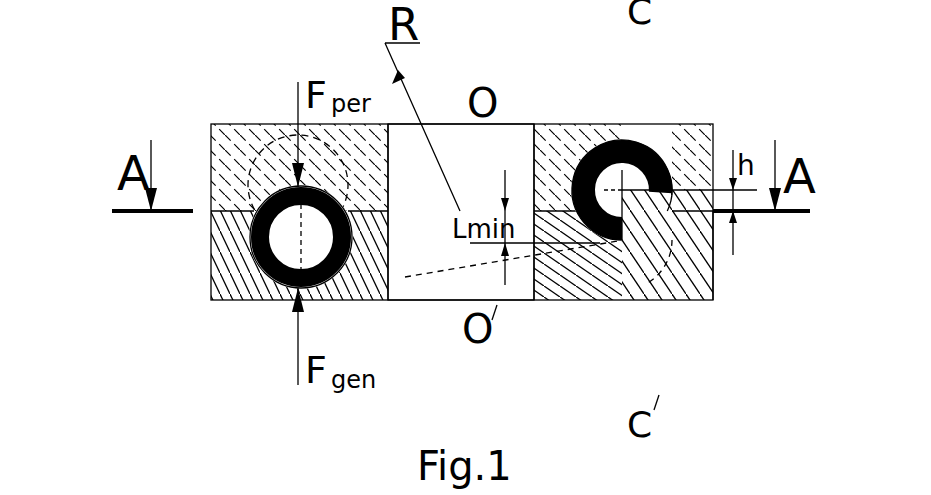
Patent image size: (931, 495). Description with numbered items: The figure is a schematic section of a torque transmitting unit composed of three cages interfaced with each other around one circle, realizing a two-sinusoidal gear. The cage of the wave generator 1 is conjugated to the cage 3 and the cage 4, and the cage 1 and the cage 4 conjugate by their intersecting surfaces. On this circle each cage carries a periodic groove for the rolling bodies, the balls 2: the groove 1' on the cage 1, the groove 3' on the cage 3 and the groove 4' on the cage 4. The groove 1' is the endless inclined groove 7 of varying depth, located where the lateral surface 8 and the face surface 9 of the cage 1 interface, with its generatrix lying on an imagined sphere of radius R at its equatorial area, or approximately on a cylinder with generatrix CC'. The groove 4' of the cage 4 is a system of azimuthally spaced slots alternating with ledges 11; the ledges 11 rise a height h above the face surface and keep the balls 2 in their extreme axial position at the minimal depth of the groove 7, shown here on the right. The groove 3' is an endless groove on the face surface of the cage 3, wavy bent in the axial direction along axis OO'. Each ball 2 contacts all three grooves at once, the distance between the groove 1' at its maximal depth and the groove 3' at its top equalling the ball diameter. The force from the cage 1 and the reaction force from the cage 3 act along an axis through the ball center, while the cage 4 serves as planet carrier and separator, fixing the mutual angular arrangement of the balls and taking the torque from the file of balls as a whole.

The cage of the wave generator 1 is at (603, 297).
The periodic groove of cage 1 1' is at (308, 297).
The ball 2 is at (628, 155).
The cage 3 is at (760, 110).
The periodic groove of cage 3 3' is at (299, 115).
The cage 4 is at (786, 254).
The groove of cage 4 4' is at (261, 284).
The endless inclined groove 7 is at (410, 290).
The lateral surface 8 is at (640, 277).
The face surface 9 is at (557, 213).
The ledge 11 is at (672, 163).